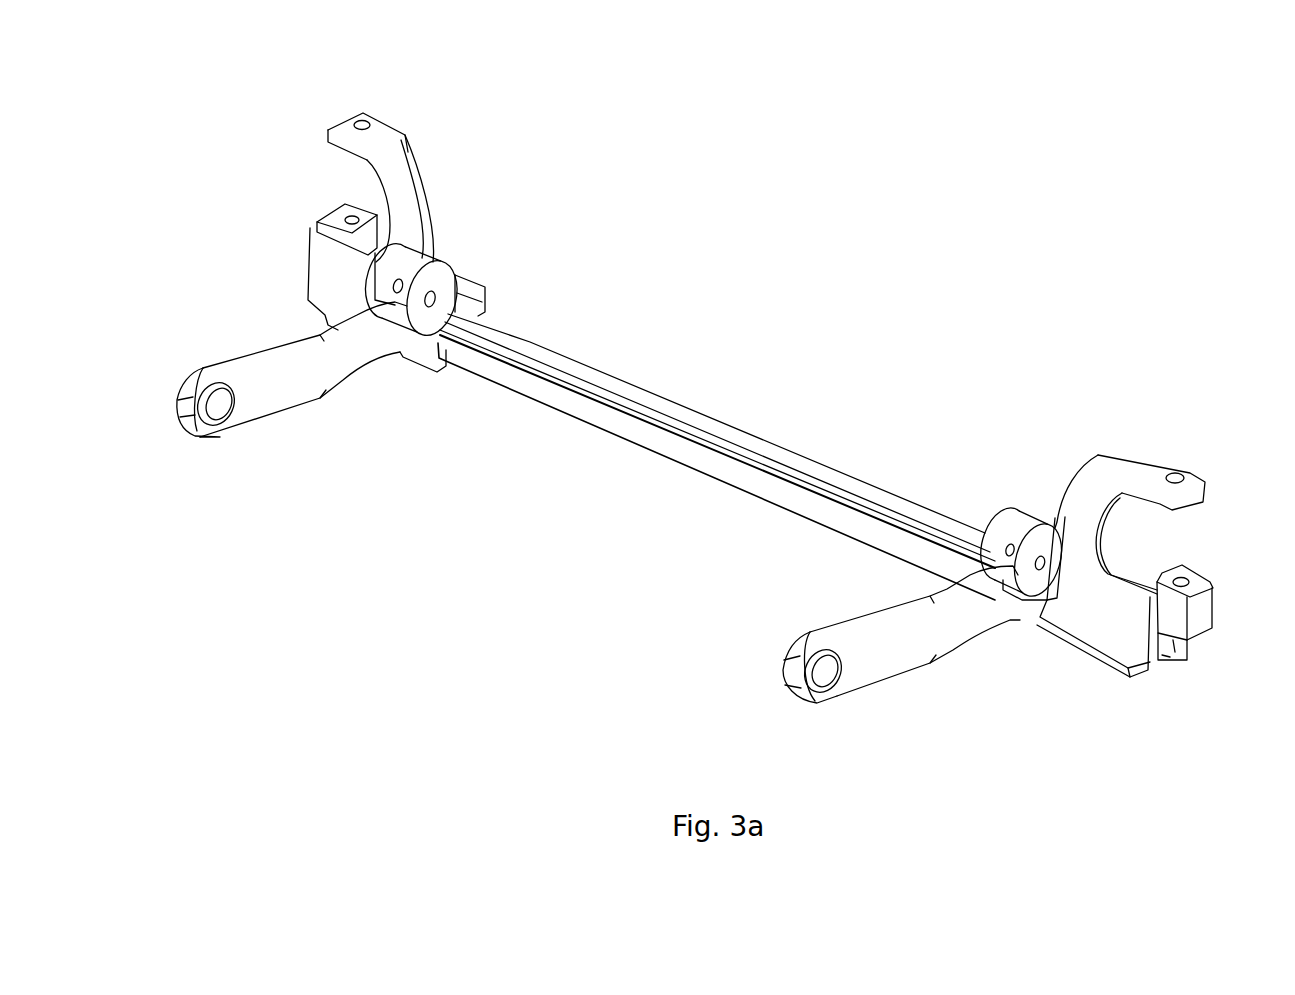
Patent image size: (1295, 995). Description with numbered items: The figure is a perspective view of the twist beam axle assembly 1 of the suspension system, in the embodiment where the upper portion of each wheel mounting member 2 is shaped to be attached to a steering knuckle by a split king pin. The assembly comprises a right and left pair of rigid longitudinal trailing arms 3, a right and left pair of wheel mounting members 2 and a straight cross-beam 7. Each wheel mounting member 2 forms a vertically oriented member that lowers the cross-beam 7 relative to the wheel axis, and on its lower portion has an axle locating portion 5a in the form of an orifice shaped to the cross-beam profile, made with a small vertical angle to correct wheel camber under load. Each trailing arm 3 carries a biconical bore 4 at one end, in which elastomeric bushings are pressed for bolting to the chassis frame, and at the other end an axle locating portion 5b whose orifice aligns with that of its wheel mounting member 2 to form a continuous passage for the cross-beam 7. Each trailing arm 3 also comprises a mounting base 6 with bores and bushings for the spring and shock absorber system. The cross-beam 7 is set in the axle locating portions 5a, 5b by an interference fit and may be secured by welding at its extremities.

The twist beam axle assembly 1 is at (761, 332).
The wheel mounting member 2 is at (337, 273).
The trailing arm 3 is at (310, 377).
The biconical bore 4 is at (225, 418).
The axle locating portion 5a is at (1178, 657).
The axle locating portion 5b is at (470, 302).
The mounting base 6 is at (418, 318).
The cross-beam 7 is at (670, 445).